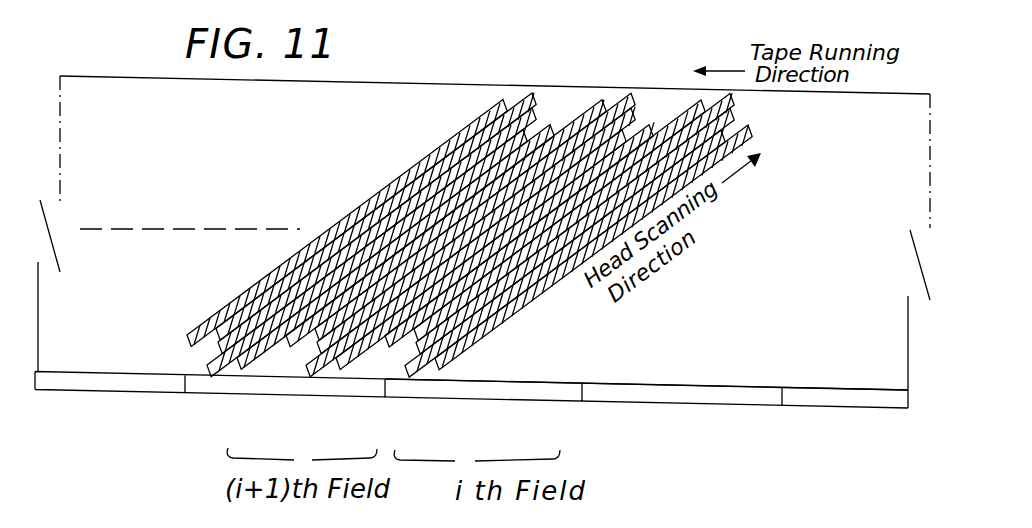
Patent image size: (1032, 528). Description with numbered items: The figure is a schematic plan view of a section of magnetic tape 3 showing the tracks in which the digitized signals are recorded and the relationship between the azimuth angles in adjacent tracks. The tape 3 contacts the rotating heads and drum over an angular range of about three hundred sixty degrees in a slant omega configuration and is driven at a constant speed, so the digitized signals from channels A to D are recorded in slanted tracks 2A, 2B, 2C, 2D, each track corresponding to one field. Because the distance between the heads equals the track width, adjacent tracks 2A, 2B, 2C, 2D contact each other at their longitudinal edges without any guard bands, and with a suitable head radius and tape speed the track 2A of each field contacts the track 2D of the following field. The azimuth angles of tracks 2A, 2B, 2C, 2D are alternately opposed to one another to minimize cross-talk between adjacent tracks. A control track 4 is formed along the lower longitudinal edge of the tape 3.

The track 2A is at (290, 340).
The track 2B is at (319, 344).
The track 2C is at (310, 368).
The track 2D is at (340, 362).
The magnetic tape 3 is at (705, 372).
The control track 4 is at (834, 398).